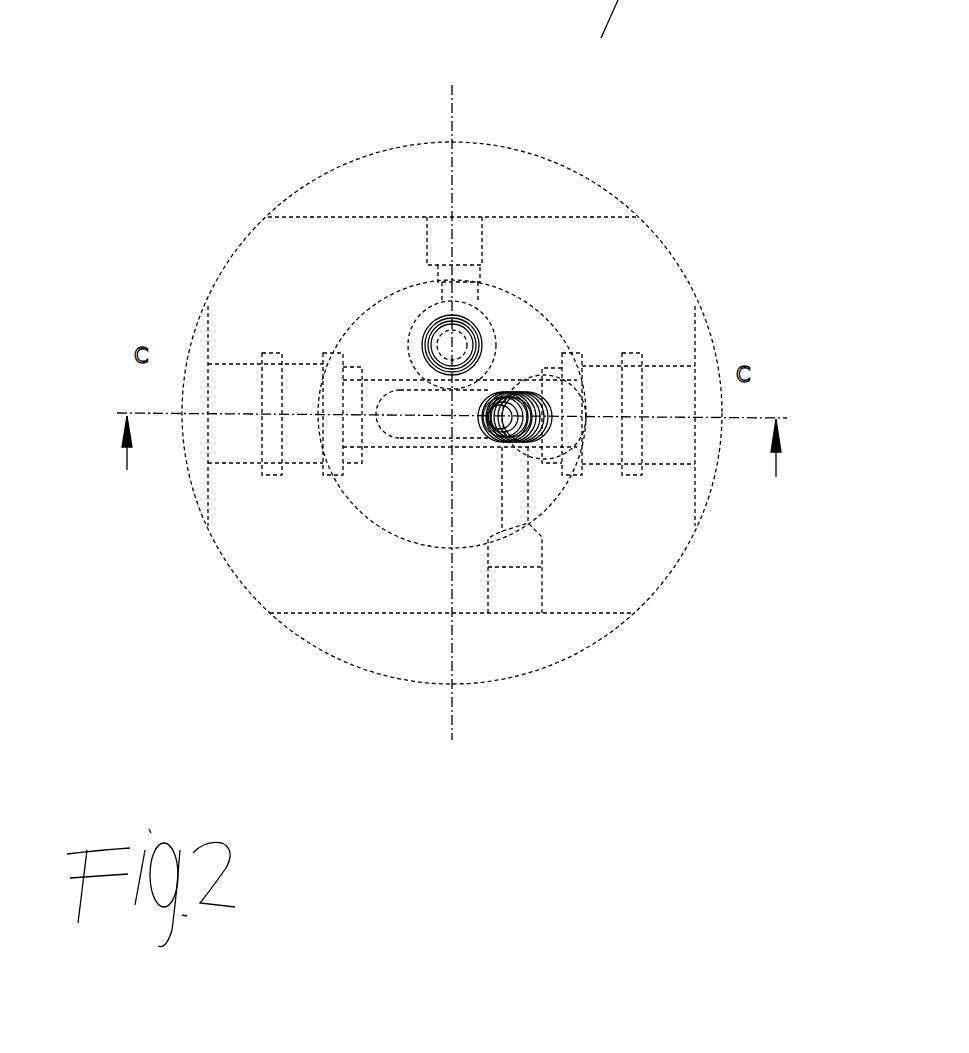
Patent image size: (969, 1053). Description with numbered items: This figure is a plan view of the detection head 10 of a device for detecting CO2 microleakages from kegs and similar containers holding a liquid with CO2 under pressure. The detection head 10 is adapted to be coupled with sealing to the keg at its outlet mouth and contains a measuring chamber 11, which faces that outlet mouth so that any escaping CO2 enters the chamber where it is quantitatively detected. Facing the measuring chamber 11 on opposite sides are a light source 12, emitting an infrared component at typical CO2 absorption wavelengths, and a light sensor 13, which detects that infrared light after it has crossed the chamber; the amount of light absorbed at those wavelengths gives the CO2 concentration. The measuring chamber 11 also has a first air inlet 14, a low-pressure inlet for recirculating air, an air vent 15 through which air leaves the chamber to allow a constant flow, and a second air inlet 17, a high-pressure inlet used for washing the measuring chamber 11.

The detection head 10 is at (615, 240).
The measuring chamber 11 is at (388, 498).
The light source 12 is at (237, 375).
The light sensor 13 is at (667, 380).
The first air inlet 14 is at (448, 313).
The air vent 15 is at (526, 392).
The second air inlet 17 is at (518, 502).